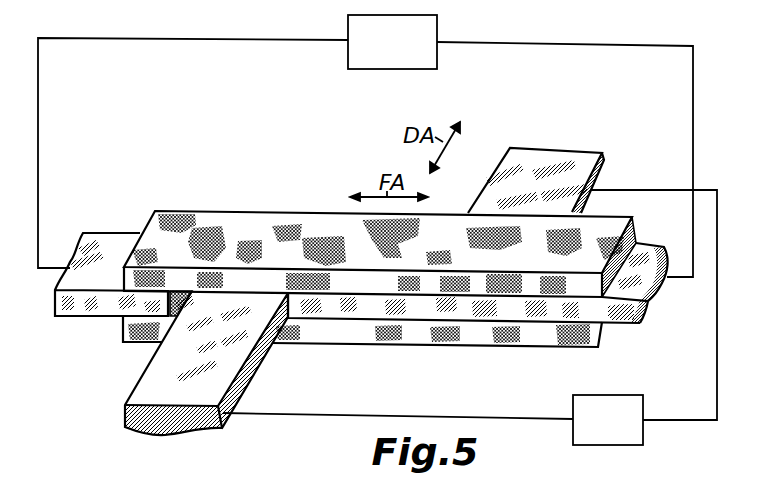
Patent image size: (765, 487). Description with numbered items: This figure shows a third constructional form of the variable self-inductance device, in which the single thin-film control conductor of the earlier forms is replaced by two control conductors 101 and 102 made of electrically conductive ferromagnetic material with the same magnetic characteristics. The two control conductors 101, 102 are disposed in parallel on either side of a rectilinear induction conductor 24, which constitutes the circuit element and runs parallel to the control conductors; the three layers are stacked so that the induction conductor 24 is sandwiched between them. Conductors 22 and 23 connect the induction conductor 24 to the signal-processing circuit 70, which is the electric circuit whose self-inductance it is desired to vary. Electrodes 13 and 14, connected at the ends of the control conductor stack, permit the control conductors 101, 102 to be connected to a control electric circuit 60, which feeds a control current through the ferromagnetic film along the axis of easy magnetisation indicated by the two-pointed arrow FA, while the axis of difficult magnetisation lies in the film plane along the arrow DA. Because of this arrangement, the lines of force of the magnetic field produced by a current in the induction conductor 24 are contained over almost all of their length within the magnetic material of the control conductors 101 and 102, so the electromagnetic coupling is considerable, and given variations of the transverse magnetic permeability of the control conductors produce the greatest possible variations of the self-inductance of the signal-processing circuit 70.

The control conductor 101 is at (263, 222).
The control conductor 102 is at (405, 337).
The electrode 13 is at (113, 257).
The electrode 14 is at (650, 254).
The conductor 22 is at (238, 353).
The conductor 23 is at (498, 170).
The induction conductor 24 is at (455, 310).
The control electric circuit 60 is at (365, 146).
The signal-processing circuit 70 is at (470, 317).